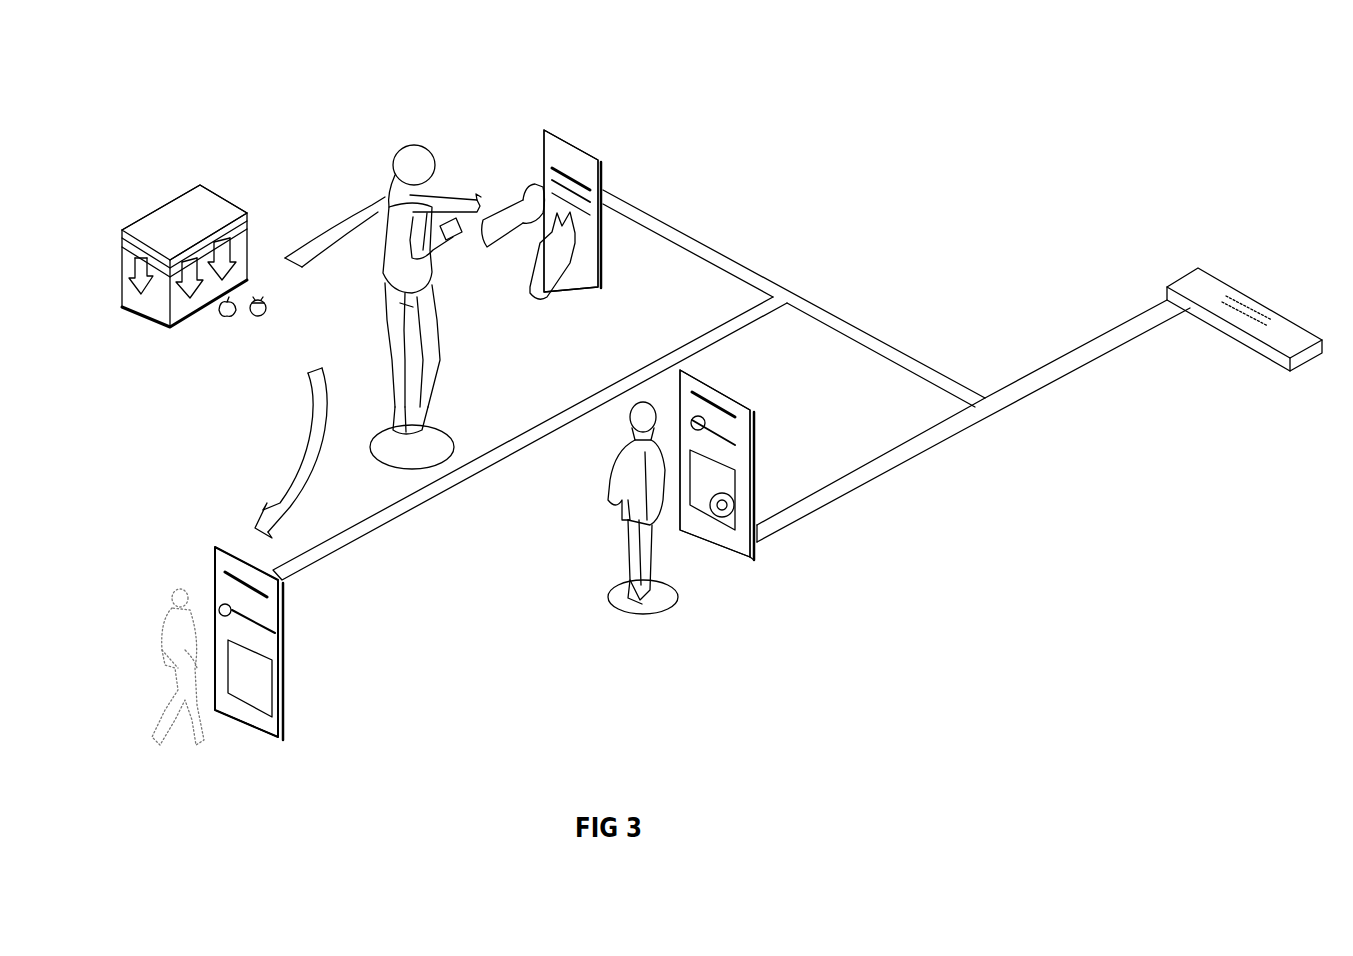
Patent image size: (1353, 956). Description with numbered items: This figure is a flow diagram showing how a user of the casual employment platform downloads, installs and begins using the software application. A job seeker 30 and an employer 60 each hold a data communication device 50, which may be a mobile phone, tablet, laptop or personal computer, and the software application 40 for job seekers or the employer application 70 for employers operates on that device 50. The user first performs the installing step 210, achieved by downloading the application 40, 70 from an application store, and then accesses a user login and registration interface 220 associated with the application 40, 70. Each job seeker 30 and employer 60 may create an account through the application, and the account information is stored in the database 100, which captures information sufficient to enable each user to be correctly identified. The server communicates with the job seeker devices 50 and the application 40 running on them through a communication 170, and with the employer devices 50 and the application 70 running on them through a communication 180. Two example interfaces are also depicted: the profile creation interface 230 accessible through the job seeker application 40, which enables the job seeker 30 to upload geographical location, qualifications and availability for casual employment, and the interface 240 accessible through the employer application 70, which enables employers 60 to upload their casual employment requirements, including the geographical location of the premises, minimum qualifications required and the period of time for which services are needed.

The job seeker 30 is at (148, 637).
The employer 60 is at (608, 486).
The software application 40 is at (220, 566).
The employer application 70 is at (738, 424).
The data communication device 50 is at (146, 323).
The database 100 is at (1207, 283).
The communication 170 is at (447, 495).
The communication 180 is at (916, 466).
The installing 210 is at (240, 249).
The user login and registration interface 220 is at (586, 268).
The profile creation interface 230 is at (274, 728).
The employer interface 240 is at (752, 548).